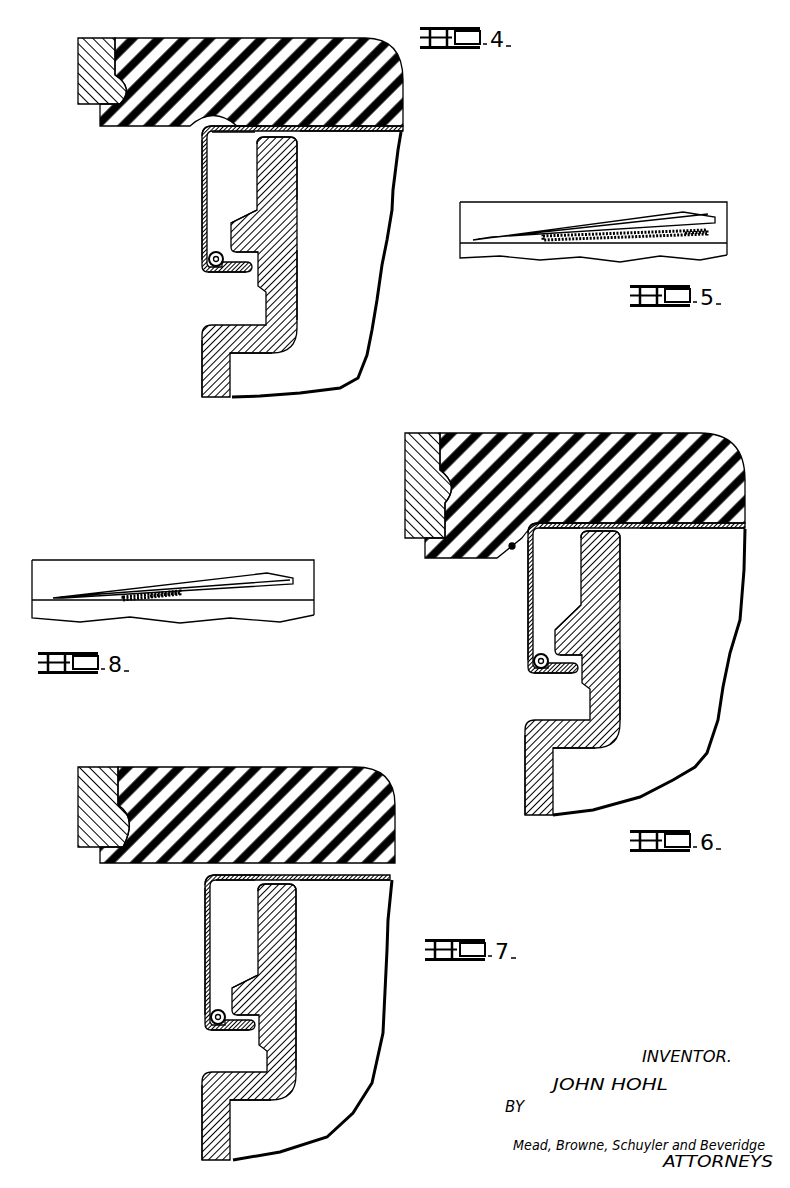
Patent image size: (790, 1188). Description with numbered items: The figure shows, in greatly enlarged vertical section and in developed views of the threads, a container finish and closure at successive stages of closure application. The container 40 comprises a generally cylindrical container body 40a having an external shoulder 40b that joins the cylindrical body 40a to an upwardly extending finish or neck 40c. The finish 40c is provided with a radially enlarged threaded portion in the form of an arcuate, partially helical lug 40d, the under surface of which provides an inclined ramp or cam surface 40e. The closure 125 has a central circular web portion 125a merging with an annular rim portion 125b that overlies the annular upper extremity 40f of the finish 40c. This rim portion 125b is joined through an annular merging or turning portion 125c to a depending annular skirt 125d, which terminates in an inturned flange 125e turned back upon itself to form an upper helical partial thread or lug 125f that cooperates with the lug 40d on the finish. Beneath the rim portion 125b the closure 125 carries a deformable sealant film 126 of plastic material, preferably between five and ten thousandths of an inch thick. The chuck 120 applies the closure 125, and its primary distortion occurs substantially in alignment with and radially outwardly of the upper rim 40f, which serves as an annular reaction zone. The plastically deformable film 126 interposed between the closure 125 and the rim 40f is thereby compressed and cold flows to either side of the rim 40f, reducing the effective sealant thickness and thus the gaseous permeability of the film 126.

In FIG. 4, the chuck 120 is at (262, 56).
In FIG. 6, the chuck 120 is at (562, 450).
In FIG. 7, the chuck 120 is at (230, 774).
In FIG. 4, the closure 125 is at (192, 213).
In FIG. 6, the closure 125 is at (519, 617).
In FIG. 7, the closure 125 is at (191, 961).
In FIG. 4, the central circular web portion 125a is at (393, 134).
In FIG. 6, the central circular web portion 125a is at (721, 530).
In FIG. 7, the central circular web portion 125a is at (380, 882).
In FIG. 4, the annular rim portion 125b is at (203, 126).
In FIG. 6, the annular rim portion 125b is at (584, 523).
In FIG. 7, the annular rim portion 125b is at (212, 876).
In FIG. 4, the annular merging or turning portion 125c is at (200, 134).
In FIG. 6, the annular merging or turning portion 125c is at (512, 549).
In FIG. 7, the annular merging or turning portion 125c is at (203, 883).
In FIG. 4, the depending annular skirt 125d is at (206, 184).
In FIG. 6, the depending annular skirt 125d is at (531, 607).
In FIG. 7, the depending annular skirt 125d is at (238, 940).
In FIG. 4, the inturned flange 125e is at (236, 276).
In FIG. 6, the inturned flange 125e is at (561, 677).
In FIG. 7, the inturned flange 125e is at (232, 1036).
In FIG. 4, the upper helical partial thread or lug 125f is at (209, 262).
In FIG. 5, the upper helical partial thread or lug 125f is at (697, 236).
In FIG. 6, the upper helical partial thread or lug 125f is at (533, 662).
In FIG. 7, the upper helical partial thread or lug 125f is at (211, 1020).
In FIG. 8, the upper helical partial thread or lug 125f is at (173, 594).
In FIG. 4, the deformable sealant film 126 is at (236, 136).
In FIG. 6, the deformable sealant film 126 is at (556, 532).
In FIG. 7, the deformable sealant film 126 is at (240, 886).
In FIG. 4, the container 40 is at (190, 384).
In FIG. 6, the container 40 is at (513, 742).
In FIG. 7, the container 40 is at (249, 1022).
In FIG. 4, the container body 40a is at (215, 393).
In FIG. 6, the container body 40a is at (531, 805).
In FIG. 7, the container body 40a is at (216, 1138).
In FIG. 4, the external shoulder 40b is at (246, 346).
In FIG. 6, the external shoulder 40b is at (571, 742).
In FIG. 7, the external shoulder 40b is at (253, 1094).
In FIG. 4, the finish or neck 40c is at (284, 267).
In FIG. 6, the finish or neck 40c is at (601, 677).
In FIG. 7, the finish or neck 40c is at (318, 1052).
In FIG. 4, the arcuate partially helical lug 40d is at (241, 236).
In FIG. 5, the arcuate partially helical lug 40d is at (608, 220).
In FIG. 6, the arcuate partially helical lug 40d is at (558, 642).
In FIG. 7, the arcuate partially helical lug 40d is at (236, 1003).
In FIG. 8, the arcuate partially helical lug 40d is at (202, 580).
In FIG. 4, the inclined ramp or cam surface 40e is at (250, 255).
In FIG. 6, the inclined ramp or cam surface 40e is at (556, 658).
In FIG. 7, the inclined ramp or cam surface 40e is at (250, 1018).
In FIG. 4, the annular upper extremity or rim 40f is at (300, 152).
In FIG. 6, the annular upper extremity or rim 40f is at (623, 546).
In FIG. 7, the annular upper extremity or rim 40f is at (300, 906).